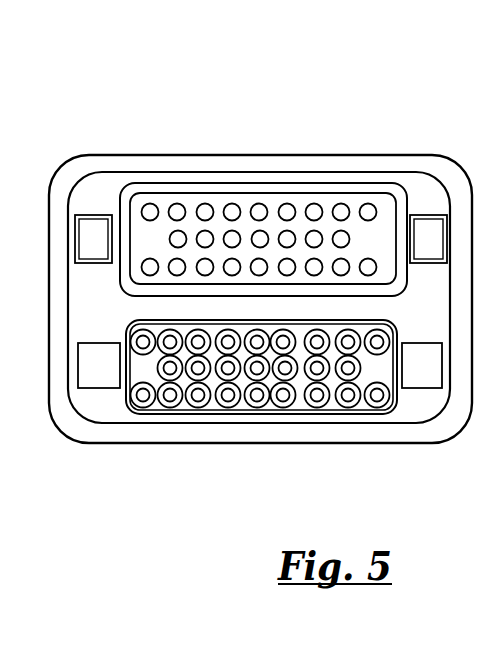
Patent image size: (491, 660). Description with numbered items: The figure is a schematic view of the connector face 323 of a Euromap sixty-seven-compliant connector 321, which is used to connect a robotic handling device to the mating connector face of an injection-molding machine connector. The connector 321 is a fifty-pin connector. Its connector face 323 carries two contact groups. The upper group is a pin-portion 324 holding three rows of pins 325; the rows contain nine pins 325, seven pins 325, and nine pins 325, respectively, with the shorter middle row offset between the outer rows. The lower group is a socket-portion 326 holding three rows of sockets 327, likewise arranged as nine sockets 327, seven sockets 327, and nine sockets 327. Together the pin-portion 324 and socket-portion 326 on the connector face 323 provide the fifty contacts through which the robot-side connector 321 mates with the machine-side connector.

The Euromap 67-compliant connector 321 is at (197, 155).
The connector face 323 is at (117, 403).
The pin-portion 324 is at (143, 231).
The pins 325 is at (207, 238).
The socket-portion 326 is at (268, 408).
The sockets 327 is at (163, 406).